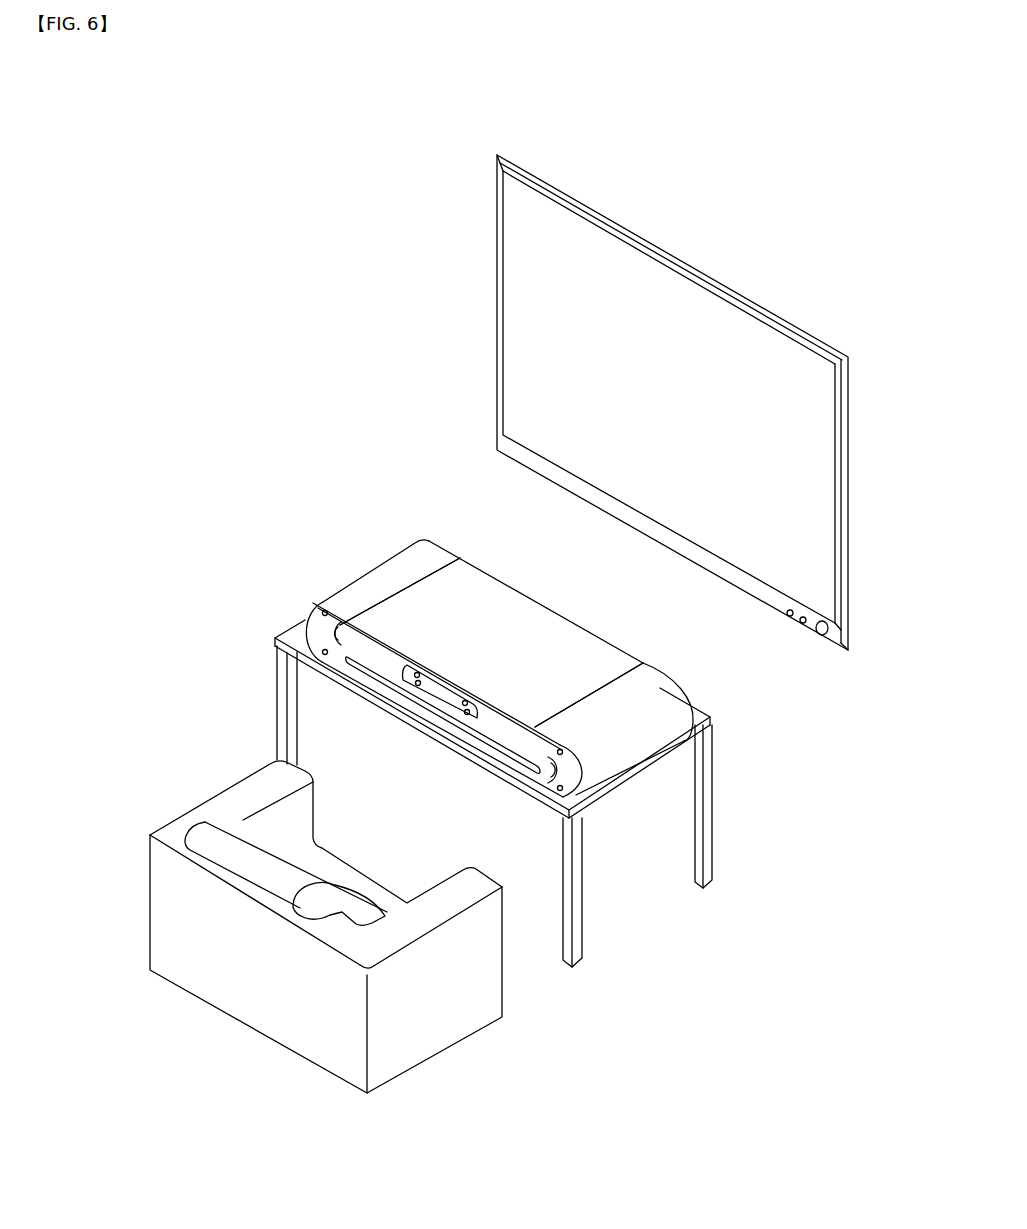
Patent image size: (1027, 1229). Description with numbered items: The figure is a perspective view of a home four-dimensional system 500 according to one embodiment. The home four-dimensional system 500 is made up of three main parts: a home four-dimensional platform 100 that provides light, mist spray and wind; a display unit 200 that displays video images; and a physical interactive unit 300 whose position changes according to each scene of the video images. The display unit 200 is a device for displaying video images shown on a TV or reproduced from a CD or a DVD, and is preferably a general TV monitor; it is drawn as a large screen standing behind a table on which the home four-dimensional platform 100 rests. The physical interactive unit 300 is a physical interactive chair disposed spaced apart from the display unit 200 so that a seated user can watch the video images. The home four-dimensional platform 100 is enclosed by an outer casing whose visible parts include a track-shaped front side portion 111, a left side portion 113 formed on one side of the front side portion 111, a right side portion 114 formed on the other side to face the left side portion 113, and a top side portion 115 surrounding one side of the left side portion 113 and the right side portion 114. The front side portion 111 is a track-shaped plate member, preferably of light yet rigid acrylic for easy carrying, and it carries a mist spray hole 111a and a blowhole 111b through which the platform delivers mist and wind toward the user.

The home 4D system 500 is at (165, 91).
The display unit 200 is at (689, 263).
The home 4D platform 100 is at (487, 659).
The left side portion 113 is at (380, 576).
The top side portion 115 is at (520, 628).
The right side portion 114 is at (655, 710).
The front side portion 111 is at (443, 728).
The mist spray hole 111a is at (418, 683).
The blowhole 111b is at (506, 765).
The physical interactive unit 300 is at (271, 897).